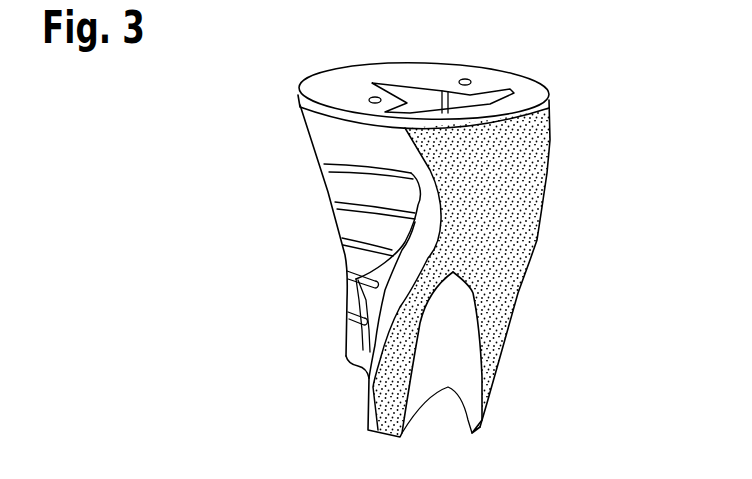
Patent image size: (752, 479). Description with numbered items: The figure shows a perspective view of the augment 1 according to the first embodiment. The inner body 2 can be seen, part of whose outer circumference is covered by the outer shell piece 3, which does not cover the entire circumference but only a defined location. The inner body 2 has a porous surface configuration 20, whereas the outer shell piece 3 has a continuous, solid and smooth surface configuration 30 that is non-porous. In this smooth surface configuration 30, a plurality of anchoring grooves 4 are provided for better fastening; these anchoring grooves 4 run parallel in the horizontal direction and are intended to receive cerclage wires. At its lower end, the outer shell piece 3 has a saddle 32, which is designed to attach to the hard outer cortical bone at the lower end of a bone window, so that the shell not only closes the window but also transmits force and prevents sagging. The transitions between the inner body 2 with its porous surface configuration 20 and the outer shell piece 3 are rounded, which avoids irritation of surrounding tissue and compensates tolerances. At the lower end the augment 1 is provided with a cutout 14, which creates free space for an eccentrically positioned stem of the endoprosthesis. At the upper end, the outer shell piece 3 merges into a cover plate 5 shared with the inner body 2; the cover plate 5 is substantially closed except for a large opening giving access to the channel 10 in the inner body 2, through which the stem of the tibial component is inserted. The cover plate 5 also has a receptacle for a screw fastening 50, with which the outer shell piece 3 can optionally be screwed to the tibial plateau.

The augment 1 is at (568, 124).
The inner body 2 is at (547, 190).
The outer shell piece 3 is at (342, 186).
The anchoring grooves 4 is at (330, 167).
The cover plate 5 is at (418, 77).
The channel 10 is at (487, 97).
The cutout 14 is at (450, 410).
The porous surface configuration 20 is at (497, 285).
The surface configuration 30 is at (345, 225).
The saddle 32 is at (348, 383).
The screw fastening 50 is at (372, 97).